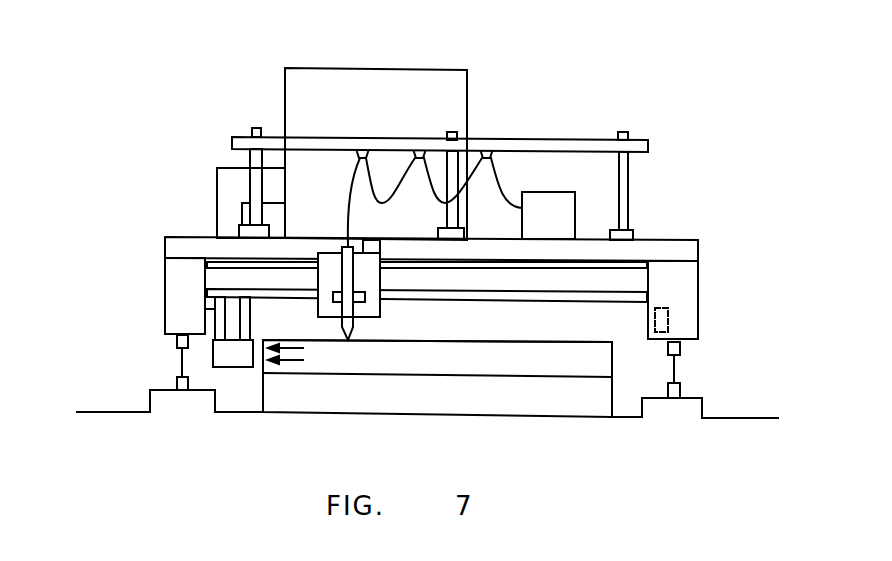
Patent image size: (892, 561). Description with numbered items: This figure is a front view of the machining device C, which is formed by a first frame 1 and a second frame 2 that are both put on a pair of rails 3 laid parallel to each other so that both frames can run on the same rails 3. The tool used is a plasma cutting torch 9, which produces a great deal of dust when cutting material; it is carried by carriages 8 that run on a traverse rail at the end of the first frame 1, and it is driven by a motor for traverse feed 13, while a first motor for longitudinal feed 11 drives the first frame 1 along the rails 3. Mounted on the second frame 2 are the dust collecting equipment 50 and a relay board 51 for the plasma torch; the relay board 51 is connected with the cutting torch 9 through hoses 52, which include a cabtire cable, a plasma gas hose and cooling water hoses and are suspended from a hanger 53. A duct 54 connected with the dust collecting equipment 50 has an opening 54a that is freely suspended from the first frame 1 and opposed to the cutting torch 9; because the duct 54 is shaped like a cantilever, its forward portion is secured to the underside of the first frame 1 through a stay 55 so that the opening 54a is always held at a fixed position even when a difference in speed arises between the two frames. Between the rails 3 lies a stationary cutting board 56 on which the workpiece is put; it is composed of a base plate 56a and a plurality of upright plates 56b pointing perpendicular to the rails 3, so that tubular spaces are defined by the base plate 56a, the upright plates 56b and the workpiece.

The machining device C is at (260, 67).
The dust collecting equipment 50 is at (383, 82).
The hanger 53 is at (521, 147).
The duct 54 is at (210, 192).
The relay board 51 is at (557, 198).
The hoses 52 is at (493, 179).
The first frame 1 is at (399, 273).
The second frame 2 is at (177, 250).
The motor for traverse feed 13 is at (351, 274).
The carriages 8 is at (320, 311).
The cutting torch 9 is at (357, 331).
The stay 55 is at (245, 320).
The opening 54a is at (237, 355).
The rails 3 is at (182, 365).
The first motor for longitudinal feed 11 is at (668, 330).
The stationary cutting board 56 is at (462, 387).
The upright plates 56b is at (527, 340).
The base plate 56a is at (545, 368).